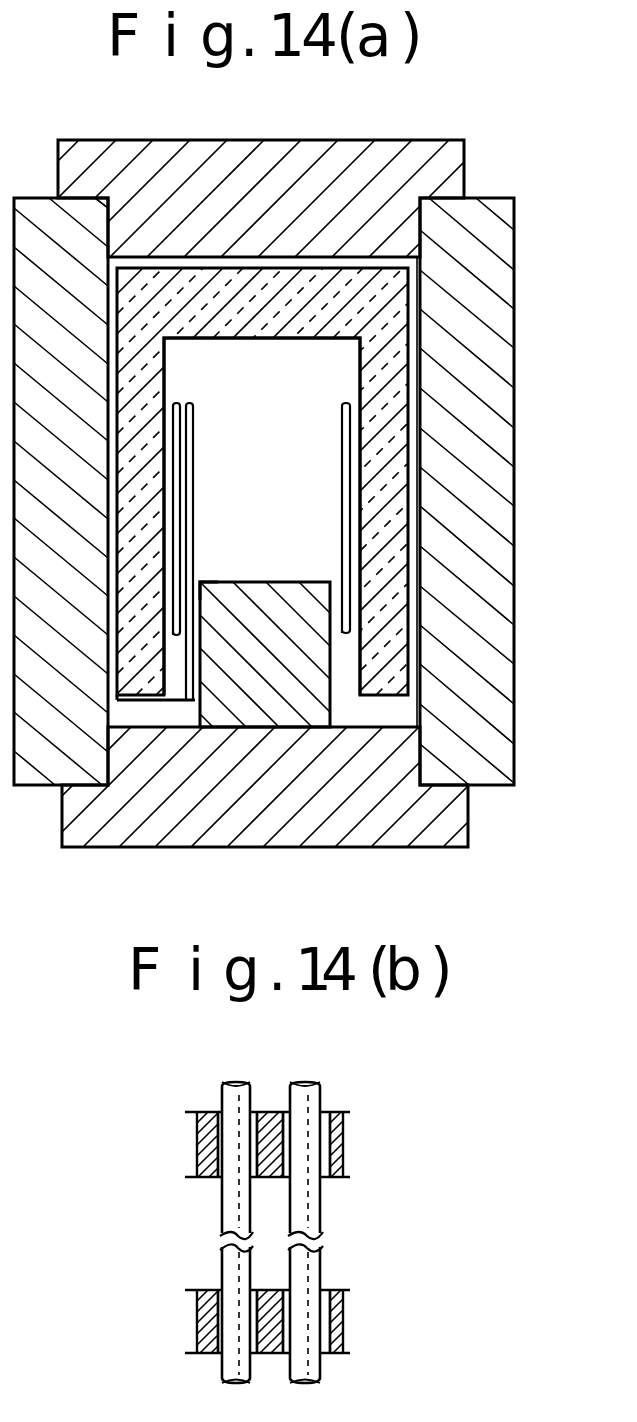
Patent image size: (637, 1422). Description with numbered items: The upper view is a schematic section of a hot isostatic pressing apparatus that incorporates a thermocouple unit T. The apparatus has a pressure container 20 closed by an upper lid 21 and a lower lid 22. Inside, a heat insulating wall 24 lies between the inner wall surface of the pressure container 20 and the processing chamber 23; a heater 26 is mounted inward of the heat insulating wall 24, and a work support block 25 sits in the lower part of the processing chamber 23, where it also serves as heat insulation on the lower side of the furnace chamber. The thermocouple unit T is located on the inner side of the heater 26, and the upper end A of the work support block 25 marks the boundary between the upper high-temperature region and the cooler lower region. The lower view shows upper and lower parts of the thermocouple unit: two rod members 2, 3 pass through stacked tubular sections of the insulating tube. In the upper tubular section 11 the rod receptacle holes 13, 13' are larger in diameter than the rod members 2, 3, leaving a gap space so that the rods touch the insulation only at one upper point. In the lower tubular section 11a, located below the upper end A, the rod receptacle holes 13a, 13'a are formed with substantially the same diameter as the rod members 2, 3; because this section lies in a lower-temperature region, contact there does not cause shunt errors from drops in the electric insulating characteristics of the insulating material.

In FIG. 14A, the pressure container 20 is at (485, 225).
In FIG. 14A, the upper lid 21 is at (400, 157).
In FIG. 14A, the lower lid 22 is at (427, 823).
In FIG. 14A, the processing chamber 23 is at (310, 437).
In FIG. 14A, the heat insulating wall 24 is at (385, 327).
In FIG. 14A, the work support block 25 is at (305, 657).
In FIG. 14A, the heater 26 is at (350, 486).
In FIG. 14A, the thermocouple T is at (195, 404).
In FIG. 14A, the upper end of the work support block A is at (197, 578).
In FIG. 14B, the rod member 2 is at (237, 1083).
In FIG. 14B, the rod member 3 is at (305, 1085).
In FIG. 14B, the upper insulating plate 11 is at (345, 1143).
In FIG. 14B, the lower insulating plate 11a is at (348, 1323).
In FIG. 14B, the through hole 13 is at (208, 1169).
In FIG. 14B, the through hole 13' is at (346, 1169).
In FIG. 14B, the through hole 13a is at (218, 1290).
In FIG. 14B, the through hole 13'a is at (353, 1299).